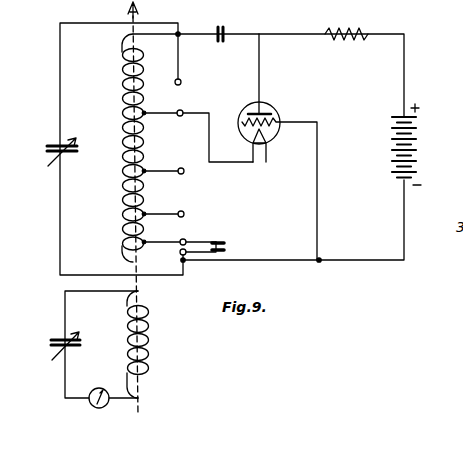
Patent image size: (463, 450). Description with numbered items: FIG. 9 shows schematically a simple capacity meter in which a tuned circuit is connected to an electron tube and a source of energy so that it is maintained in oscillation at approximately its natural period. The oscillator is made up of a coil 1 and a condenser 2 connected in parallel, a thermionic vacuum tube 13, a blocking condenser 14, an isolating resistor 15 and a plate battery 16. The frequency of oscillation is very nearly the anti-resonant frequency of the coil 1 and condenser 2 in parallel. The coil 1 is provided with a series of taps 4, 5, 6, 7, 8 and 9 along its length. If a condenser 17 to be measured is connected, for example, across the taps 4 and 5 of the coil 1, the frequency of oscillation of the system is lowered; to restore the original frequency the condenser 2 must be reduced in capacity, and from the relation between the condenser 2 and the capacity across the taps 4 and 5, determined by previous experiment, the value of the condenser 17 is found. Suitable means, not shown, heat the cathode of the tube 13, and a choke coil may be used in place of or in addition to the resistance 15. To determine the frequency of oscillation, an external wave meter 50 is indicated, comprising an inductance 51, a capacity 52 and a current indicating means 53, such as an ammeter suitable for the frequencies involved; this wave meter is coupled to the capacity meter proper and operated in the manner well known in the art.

The coil 1 is at (123, 148).
The condenser 2 is at (52, 136).
The tap 4 is at (190, 257).
The tap 5 is at (179, 234).
The tap terminal 6 is at (168, 206).
The tap terminal 7 is at (168, 164).
The tap terminal 8 is at (197, 136).
The tap terminal 9 is at (185, 62).
The thermionic vacuum tube 13 is at (277, 147).
The blocking condenser 14 is at (226, 26).
The isolating resistor 15 is at (349, 28).
The plate battery 16 is at (417, 144).
The condenser 17 is at (231, 243).
The external wave meter 50 is at (110, 322).
The inductance 51 is at (149, 348).
The capacity 52 is at (81, 356).
The current indicating means 53 is at (88, 402).